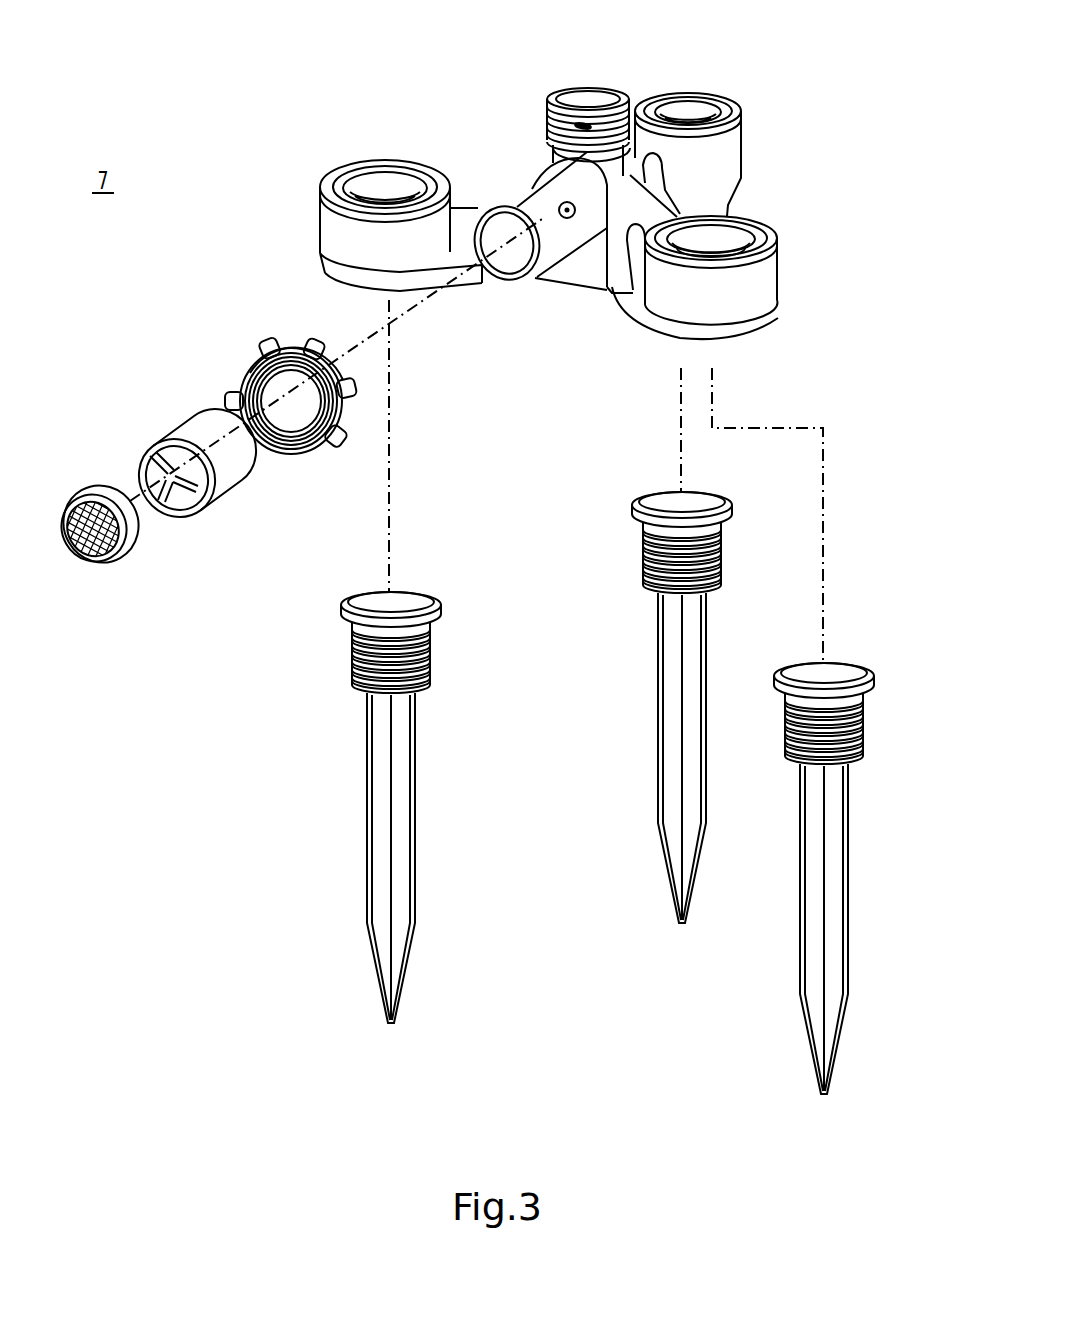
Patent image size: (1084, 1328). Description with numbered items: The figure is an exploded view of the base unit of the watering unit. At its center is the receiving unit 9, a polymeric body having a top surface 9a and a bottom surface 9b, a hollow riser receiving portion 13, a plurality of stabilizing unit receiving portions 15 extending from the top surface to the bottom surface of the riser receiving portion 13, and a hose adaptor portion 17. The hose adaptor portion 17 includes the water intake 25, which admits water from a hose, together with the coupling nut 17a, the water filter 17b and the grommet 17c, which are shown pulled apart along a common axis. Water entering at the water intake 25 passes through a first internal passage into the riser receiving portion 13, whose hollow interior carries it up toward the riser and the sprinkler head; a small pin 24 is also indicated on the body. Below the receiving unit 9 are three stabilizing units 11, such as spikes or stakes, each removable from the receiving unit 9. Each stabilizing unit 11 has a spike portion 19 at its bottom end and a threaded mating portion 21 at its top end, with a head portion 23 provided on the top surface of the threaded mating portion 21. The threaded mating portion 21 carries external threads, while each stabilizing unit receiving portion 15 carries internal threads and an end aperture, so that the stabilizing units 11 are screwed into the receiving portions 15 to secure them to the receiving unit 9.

The receiving unit 9 is at (819, 327).
The top surface 9a is at (760, 240).
The bottom surface 9b is at (627, 300).
The stabilizing unit 11 is at (883, 1105).
The riser receiving portion 13 is at (585, 88).
The stabilizing unit receiving portion 15 is at (372, 178).
The hose adaptor portion 17 is at (549, 292).
The coupling nut 17a is at (262, 348).
The water filter 17b is at (84, 487).
The grommet 17c is at (170, 440).
The spike portion 19 is at (328, 1030).
The threaded mating portion 21 is at (336, 701).
The head portion 23 is at (607, 565).
The pin 24 is at (565, 220).
The water intake 25 is at (488, 215).